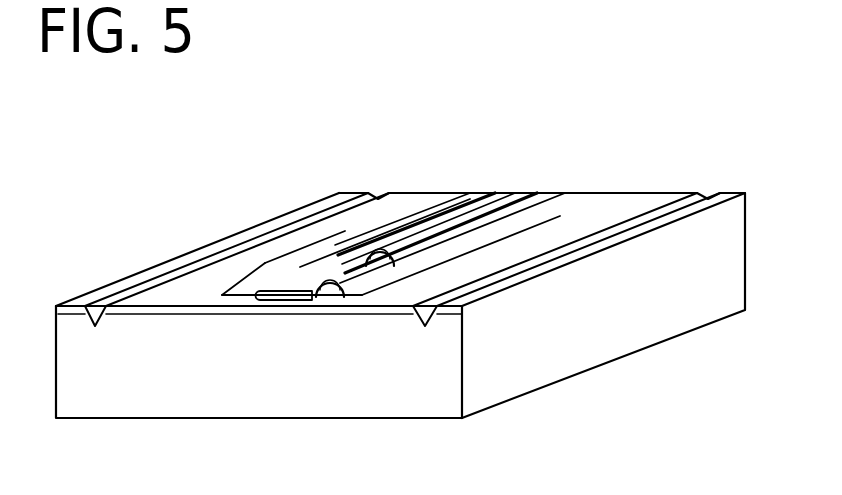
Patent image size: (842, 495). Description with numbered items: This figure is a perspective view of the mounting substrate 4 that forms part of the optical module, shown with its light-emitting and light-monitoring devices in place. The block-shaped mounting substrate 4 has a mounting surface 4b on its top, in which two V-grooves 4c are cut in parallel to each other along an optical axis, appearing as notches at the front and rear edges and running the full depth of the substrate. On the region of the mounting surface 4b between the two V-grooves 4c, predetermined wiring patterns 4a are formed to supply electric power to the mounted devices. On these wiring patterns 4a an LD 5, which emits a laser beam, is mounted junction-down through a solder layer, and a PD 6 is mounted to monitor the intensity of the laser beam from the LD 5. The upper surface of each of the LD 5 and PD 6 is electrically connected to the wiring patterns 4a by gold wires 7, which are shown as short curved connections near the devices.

The mounting substrate 4 is at (595, 330).
The wiring patterns 4a is at (535, 191).
The mounting surface 4b is at (388, 208).
The V-grooves 4c is at (108, 316).
The LD 5 is at (262, 282).
The PD 6 is at (333, 253).
The gold wires 7 is at (375, 258).